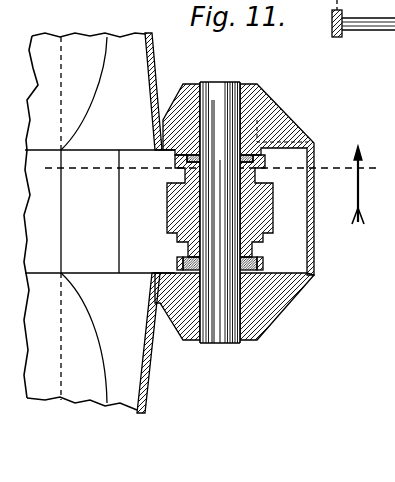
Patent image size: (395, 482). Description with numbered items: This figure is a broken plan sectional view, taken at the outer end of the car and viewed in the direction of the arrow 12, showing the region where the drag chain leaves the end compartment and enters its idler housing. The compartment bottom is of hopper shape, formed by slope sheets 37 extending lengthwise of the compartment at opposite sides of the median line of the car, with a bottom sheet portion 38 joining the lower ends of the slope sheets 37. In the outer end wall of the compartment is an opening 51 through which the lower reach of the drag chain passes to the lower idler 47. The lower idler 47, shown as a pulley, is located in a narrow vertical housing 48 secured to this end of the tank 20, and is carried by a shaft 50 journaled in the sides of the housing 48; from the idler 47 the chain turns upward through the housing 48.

The direction arrow 12 is at (220, 185).
The tank 20 is at (128, 388).
The slope sheets 37 is at (48, 50).
The bottom sheet portion 38 is at (65, 219).
The lower idler 47 is at (275, 233).
The housing 48 is at (313, 248).
The shaft 50 is at (222, 343).
The opening 51 is at (127, 266).